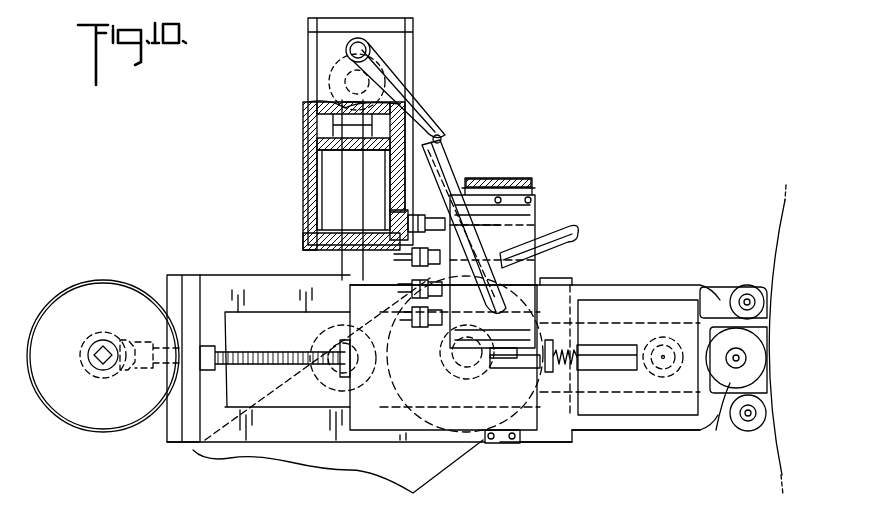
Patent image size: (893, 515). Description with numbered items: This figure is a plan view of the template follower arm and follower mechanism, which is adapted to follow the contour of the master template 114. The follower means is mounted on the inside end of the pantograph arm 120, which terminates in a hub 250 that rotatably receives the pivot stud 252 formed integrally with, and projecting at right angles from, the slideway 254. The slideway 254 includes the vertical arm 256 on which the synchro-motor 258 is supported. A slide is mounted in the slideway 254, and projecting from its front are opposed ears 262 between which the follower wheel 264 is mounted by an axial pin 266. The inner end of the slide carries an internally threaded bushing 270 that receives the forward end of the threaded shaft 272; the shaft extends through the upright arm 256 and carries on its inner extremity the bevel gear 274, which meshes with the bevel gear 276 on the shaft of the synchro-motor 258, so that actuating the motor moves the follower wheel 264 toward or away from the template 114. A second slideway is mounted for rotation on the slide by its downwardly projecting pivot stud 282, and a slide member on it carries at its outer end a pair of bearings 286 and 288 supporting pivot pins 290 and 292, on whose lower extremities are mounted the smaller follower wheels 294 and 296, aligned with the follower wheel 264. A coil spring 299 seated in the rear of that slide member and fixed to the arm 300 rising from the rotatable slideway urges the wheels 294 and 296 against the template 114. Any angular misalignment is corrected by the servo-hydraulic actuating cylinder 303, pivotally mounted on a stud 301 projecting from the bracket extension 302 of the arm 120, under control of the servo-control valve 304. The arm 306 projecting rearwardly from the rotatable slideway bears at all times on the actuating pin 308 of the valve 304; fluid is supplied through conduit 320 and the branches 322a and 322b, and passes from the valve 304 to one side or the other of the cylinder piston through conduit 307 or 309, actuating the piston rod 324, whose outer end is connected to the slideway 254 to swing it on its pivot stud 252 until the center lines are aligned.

The master template 114 is at (777, 217).
The pantograph arm 120 is at (265, 452).
The hub 250 is at (530, 420).
The pivot stud 252 is at (450, 386).
The slideway 254 is at (560, 445).
The vertical arm 256 is at (190, 285).
The synchro-motor 258 is at (103, 283).
The opposed ears 262 is at (760, 340).
The follower wheel 264 is at (730, 380).
The axial pin 266 is at (733, 357).
The internally threaded bushing 270 is at (340, 365).
The threaded shaft 272 is at (272, 348).
The bevel gear 274 is at (135, 375).
The bevel gear 276 is at (82, 350).
The pivot stud 282 is at (665, 372).
The bearing 286 is at (718, 290).
The bearing 288 is at (738, 430).
The pivot pin 290 is at (750, 302).
The pivot pin 292 is at (750, 420).
The follower wheel 294 is at (745, 286).
The follower wheel 296 is at (766, 414).
The coil spring 299 is at (565, 350).
The arm 300 is at (548, 390).
The stud 301 is at (332, 82).
The bracket extension 302 is at (455, 170).
The servo-hydraulic actuating cylinder 303 is at (417, 63).
The servo-control valve 304 is at (546, 187).
The arm 306 is at (522, 372).
The conduit 307 is at (572, 238).
The actuating pin 308 is at (512, 339).
The conduit 309 is at (442, 139).
The conduit 320 is at (420, 285).
The branch of conduit 322a is at (414, 280).
The branch of conduit 322b is at (424, 330).
The piston rod 324 is at (345, 200).